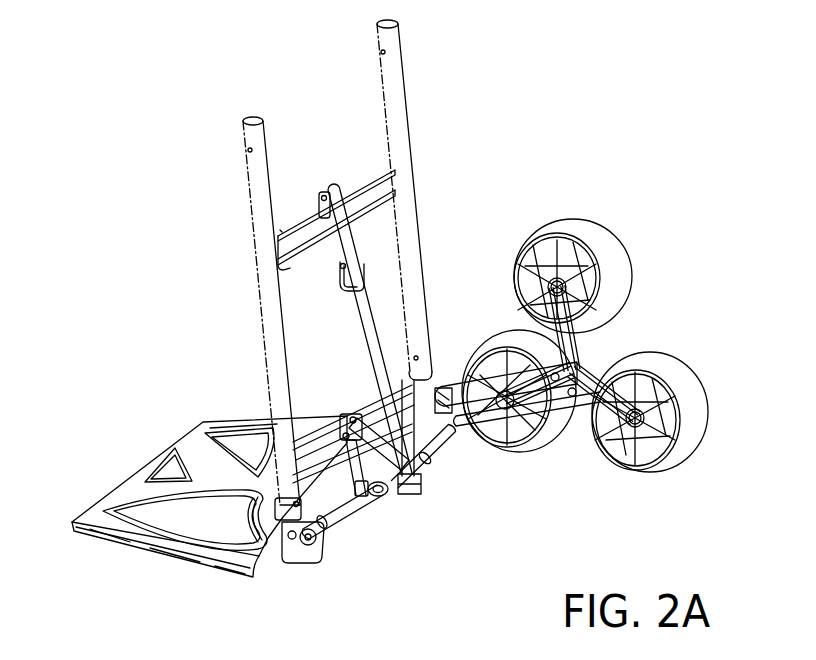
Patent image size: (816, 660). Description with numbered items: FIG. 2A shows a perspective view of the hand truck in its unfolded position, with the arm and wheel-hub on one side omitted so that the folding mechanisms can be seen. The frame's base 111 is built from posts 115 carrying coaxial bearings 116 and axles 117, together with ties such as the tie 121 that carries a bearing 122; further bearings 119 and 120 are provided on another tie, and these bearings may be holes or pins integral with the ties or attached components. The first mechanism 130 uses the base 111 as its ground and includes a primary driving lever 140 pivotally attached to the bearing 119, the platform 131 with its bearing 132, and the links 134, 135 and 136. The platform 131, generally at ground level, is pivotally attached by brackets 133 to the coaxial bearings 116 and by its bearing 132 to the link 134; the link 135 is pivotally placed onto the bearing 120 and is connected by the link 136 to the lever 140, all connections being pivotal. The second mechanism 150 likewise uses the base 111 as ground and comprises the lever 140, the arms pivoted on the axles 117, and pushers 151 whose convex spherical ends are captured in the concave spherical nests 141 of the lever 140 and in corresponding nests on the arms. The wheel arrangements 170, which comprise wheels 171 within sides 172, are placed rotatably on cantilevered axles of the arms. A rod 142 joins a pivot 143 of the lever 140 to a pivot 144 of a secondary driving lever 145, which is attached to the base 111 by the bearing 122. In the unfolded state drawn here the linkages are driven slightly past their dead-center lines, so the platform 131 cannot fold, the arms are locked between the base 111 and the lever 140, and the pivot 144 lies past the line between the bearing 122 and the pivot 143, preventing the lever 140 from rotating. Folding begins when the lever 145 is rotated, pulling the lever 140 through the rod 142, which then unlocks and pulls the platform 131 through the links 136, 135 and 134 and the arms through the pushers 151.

The base 111 is at (453, 200).
The posts 115 is at (263, 203).
The bearings 116 is at (312, 562).
The axles 117 is at (268, 515).
The bearing 119 is at (350, 401).
The bearing 120 is at (340, 421).
The tie 121 is at (393, 180).
The bearing 122 is at (316, 186).
The first mechanism 130 is at (362, 490).
The platform 131 is at (113, 498).
The bearing 132 is at (351, 512).
The brackets 133 is at (290, 558).
The link 134 is at (373, 511).
The link 135 is at (238, 409).
The link 136 is at (395, 395).
The primary driving lever 140 is at (433, 380).
The concave spherical nests 141 is at (385, 488).
The rod 142 is at (360, 310).
The pivot 143 is at (423, 506).
The pivot 144 is at (360, 263).
The secondary driving lever 145 is at (338, 250).
The second mechanism 150 is at (488, 506).
The pushers 151 is at (470, 445).
The wheel arrangements 170 is at (592, 372).
The wheels 171 is at (600, 243).
The sides 172 is at (585, 273).